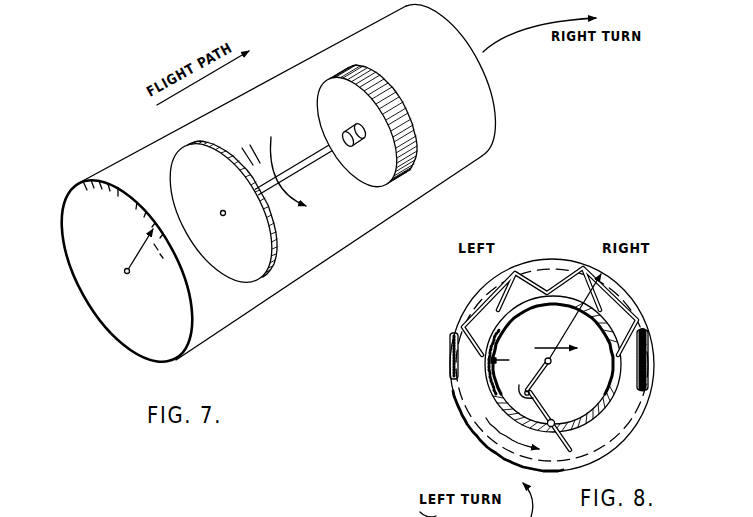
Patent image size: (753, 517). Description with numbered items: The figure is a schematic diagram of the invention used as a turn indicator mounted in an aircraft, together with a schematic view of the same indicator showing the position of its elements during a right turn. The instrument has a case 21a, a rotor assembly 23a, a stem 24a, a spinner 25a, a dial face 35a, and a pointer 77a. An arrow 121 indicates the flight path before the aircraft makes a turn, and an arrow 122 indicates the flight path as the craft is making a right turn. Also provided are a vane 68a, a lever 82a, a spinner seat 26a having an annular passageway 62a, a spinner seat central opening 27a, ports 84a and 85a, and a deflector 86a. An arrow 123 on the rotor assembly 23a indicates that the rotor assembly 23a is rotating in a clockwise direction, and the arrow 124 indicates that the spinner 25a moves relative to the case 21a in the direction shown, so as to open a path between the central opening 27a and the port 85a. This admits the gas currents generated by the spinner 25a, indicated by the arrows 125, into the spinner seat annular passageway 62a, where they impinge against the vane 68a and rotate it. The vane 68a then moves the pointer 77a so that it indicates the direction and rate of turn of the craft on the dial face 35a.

In FIG. 7, the arrow 121 is at (200, 80).
In FIG. 7, the arrow 122 is at (524, 33).
In FIG. 7, the case 21a is at (360, 243).
In FIG. 7, the rotor assembly 23a is at (405, 128).
In FIG. 7, the stem 24a is at (307, 165).
In FIG. 7, the spinner 25a is at (240, 268).
In FIG. 7, the dial face 35a is at (163, 327).
In FIG. 7, the pointer 77a is at (141, 255).
In FIG. 8, the pointer 77a is at (562, 334).
In FIG. 7, the arrow 123 is at (377, 124).
In FIG. 7, the arrow 124 is at (274, 162).
In FIG. 8, the arrow 124 is at (545, 346).
In FIG. 8, the spinner seat 26a is at (482, 423).
In FIG. 8, the spinner seat central opening 27a is at (497, 392).
In FIG. 8, the arrows 125 is at (506, 362).
In FIG. 8, the annular passageway 62a is at (537, 452).
In FIG. 8, the vane 68a is at (622, 438).
In FIG. 8, the lever 82a is at (544, 373).
In FIG. 8, the port 84a is at (648, 348).
In FIG. 8, the port 85a is at (449, 340).
In FIG. 8, the deflector 86a is at (537, 288).